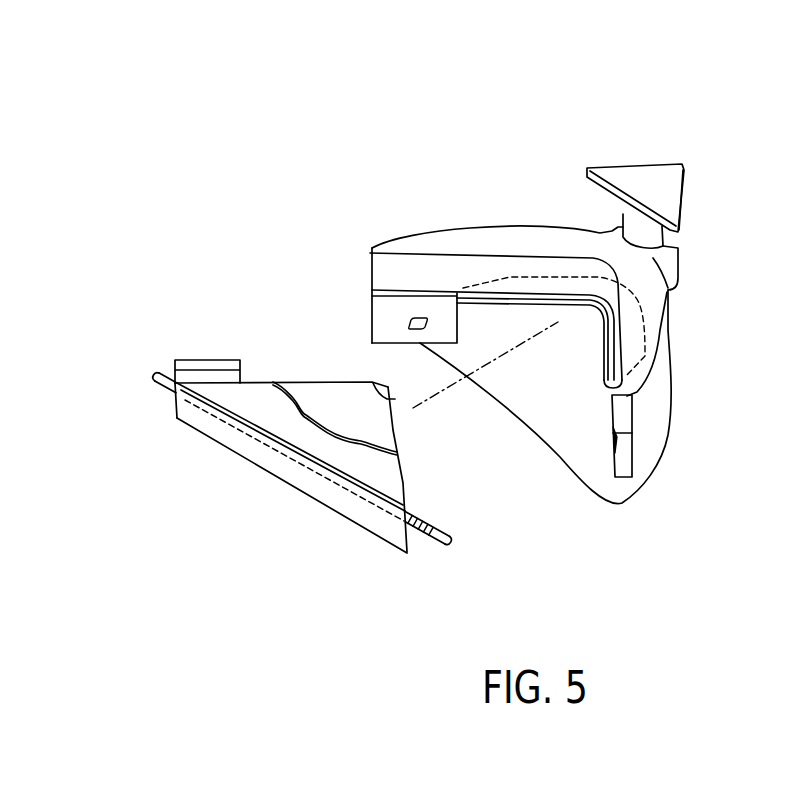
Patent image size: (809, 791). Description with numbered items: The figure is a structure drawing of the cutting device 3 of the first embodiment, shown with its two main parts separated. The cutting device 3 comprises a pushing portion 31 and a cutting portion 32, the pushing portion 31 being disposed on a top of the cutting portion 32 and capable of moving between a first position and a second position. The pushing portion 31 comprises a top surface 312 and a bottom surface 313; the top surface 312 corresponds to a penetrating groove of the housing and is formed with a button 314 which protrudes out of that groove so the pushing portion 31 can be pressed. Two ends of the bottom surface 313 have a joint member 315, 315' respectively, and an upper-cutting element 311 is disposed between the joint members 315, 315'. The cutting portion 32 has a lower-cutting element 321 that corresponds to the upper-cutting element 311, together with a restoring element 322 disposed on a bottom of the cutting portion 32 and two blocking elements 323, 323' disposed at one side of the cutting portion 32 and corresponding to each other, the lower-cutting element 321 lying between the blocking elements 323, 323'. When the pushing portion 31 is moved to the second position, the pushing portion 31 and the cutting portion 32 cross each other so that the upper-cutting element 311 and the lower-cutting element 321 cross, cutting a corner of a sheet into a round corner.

The cutting device 3 is at (290, 277).
The pushing portion 31 is at (755, 178).
The upper-cutting element 311 is at (610, 332).
The top surface 312 is at (647, 277).
The bottom surface 313 is at (663, 383).
The button 314 is at (668, 193).
The joint member 315 is at (677, 429).
The joint member 315' is at (682, 432).
The cutting portion 32 is at (327, 583).
The lower-cutting element 321 is at (333, 406).
The restoring element 322 is at (407, 533).
The blocking element 323 is at (167, 423).
The blocking element 323' is at (294, 464).